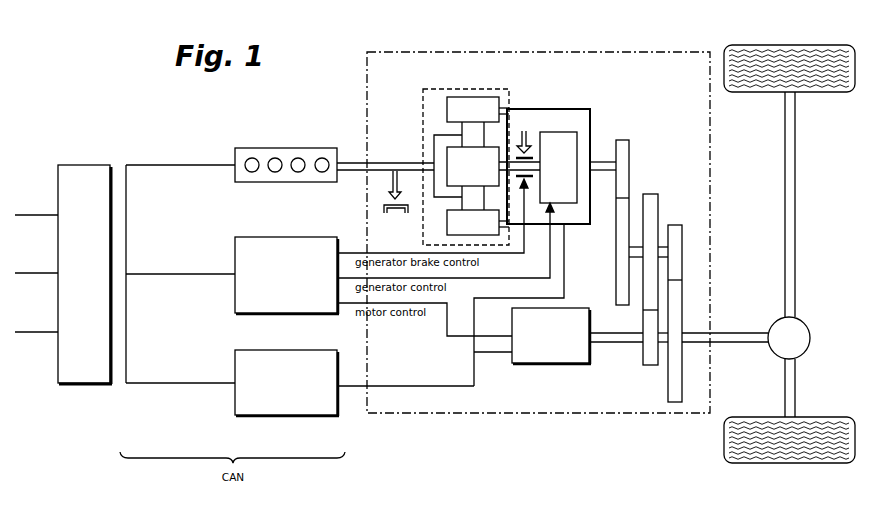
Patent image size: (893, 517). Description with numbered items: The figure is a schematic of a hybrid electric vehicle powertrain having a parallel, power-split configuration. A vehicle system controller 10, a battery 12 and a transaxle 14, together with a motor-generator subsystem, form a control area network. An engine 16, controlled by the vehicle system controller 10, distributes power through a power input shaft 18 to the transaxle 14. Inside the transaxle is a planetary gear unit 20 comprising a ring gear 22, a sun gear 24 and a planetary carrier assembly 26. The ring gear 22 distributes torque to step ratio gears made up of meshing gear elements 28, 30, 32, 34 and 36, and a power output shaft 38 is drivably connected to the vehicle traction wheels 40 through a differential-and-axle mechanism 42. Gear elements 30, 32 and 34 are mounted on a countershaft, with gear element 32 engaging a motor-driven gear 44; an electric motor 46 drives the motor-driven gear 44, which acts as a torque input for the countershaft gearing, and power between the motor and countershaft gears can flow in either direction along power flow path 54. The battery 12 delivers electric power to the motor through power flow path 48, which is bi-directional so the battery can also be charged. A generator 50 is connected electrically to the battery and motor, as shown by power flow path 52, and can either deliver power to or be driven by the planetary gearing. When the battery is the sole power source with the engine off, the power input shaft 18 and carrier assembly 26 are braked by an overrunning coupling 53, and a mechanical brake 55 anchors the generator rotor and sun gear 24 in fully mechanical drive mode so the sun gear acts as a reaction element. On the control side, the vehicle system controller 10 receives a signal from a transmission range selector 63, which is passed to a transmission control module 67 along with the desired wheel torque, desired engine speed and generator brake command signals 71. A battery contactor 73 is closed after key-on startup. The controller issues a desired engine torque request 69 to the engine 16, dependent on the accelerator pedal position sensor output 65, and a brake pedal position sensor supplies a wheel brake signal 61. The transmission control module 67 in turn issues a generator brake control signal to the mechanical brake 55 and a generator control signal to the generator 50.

The vehicle system controller 10 is at (89, 165).
The battery 12 is at (298, 416).
The transaxle 14 is at (431, 415).
The engine 16 is at (322, 148).
The power input shaft 18 is at (363, 172).
The planetary gear unit 20 is at (512, 96).
The ring gear 22 is at (445, 110).
The sun gear 24 is at (447, 156).
The planetary carrier assembly 26 is at (434, 140).
The gear element 28 is at (629, 153).
The gear element 30 is at (615, 273).
The gear element 32 is at (658, 209).
The gear element 34 is at (682, 237).
The gear element 36 is at (682, 305).
The power output shaft 38 is at (751, 346).
The vehicle traction wheels 40 is at (815, 45).
The differential-and-axle mechanism 42 is at (802, 338).
The motor-driven gear 44 is at (651, 366).
The electric motor 46 is at (550, 364).
The power flow path 48 is at (467, 384).
The generator 50 is at (590, 134).
The power flow path 52 is at (487, 300).
The overrunning coupling 53 is at (393, 180).
The power flow path 54 is at (503, 356).
The mechanical brake 55 is at (531, 140).
The wheel brake signal 61 is at (52, 335).
The transmission range selector 63 is at (52, 218).
The accelerator pedal position sensor output 65 is at (52, 276).
The transmission control module 67 is at (262, 237).
The desired engine torque request 69 is at (177, 167).
The desired wheel torque, desired engine speed and generator brake command signals 71 is at (177, 276).
The battery contactor 73 is at (177, 385).